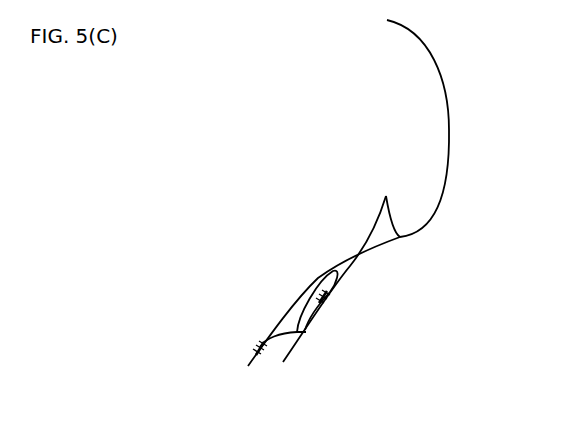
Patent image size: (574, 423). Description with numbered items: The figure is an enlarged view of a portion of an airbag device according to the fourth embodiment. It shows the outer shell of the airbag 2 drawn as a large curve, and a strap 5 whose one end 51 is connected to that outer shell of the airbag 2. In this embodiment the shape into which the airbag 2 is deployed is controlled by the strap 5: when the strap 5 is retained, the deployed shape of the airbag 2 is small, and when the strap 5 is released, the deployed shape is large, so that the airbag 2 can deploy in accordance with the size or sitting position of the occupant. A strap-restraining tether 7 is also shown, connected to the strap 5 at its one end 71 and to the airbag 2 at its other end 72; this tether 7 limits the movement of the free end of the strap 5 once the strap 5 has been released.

The airbag 2 is at (448, 88).
The strap 5 is at (345, 258).
The one end of the strap 51 is at (400, 240).
The strap-restraining tether 7 is at (304, 333).
The one end of the strap-restraining tether 71 is at (265, 352).
The other end of the strap-restraining tether 72 is at (333, 297).